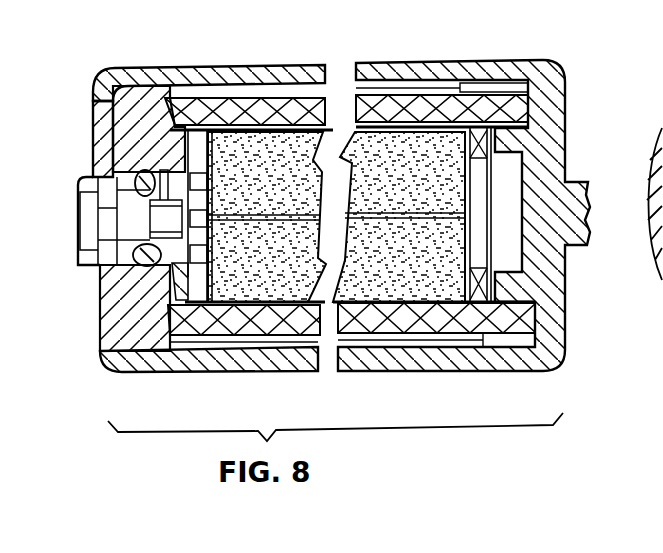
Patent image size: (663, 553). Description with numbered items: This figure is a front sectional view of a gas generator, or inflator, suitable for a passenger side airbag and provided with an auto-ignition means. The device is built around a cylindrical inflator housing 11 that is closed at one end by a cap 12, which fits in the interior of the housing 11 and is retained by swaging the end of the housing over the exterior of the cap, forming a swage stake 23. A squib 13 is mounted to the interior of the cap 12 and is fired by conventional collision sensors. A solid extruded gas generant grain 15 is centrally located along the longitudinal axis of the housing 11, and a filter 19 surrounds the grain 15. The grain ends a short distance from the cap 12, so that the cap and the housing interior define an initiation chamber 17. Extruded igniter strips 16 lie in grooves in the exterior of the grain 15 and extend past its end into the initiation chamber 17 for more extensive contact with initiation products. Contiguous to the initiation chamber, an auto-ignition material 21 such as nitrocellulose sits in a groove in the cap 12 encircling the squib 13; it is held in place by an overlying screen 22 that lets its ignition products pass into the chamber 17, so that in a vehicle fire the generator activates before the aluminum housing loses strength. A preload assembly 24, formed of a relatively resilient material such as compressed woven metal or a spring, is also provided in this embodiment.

The inflator housing 11 is at (422, 68).
The cap 12 is at (142, 98).
The squib 13 is at (176, 124).
The gas generant grain 15 is at (300, 140).
The igniter strips 16 is at (190, 302).
The initiation chamber 17 is at (176, 262).
The filter 19 is at (493, 92).
The auto-ignition material 21 is at (133, 178).
The screen 22 is at (116, 280).
The swage stake 23 is at (97, 116).
The preload assembly 24 is at (485, 293).